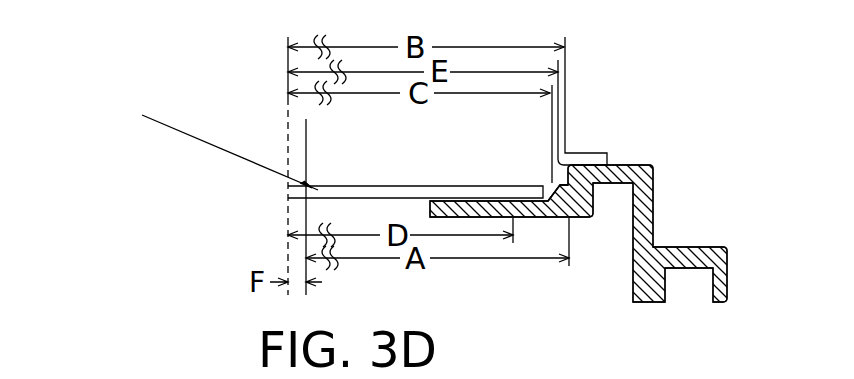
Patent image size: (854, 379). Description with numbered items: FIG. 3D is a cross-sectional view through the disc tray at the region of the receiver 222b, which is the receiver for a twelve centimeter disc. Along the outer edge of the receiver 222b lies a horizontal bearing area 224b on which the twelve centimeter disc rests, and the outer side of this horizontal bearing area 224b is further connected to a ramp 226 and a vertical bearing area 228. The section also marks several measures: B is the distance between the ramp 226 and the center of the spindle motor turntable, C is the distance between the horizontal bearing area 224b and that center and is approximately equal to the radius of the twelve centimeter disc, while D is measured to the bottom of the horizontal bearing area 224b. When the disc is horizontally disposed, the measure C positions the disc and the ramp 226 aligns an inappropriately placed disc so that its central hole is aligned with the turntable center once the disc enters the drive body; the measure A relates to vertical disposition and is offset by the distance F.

The receiver 222b is at (715, 80).
The horizontal bearing area 224b is at (528, 198).
The ramp 226 is at (557, 183).
The vertical bearing area 228 is at (562, 173).